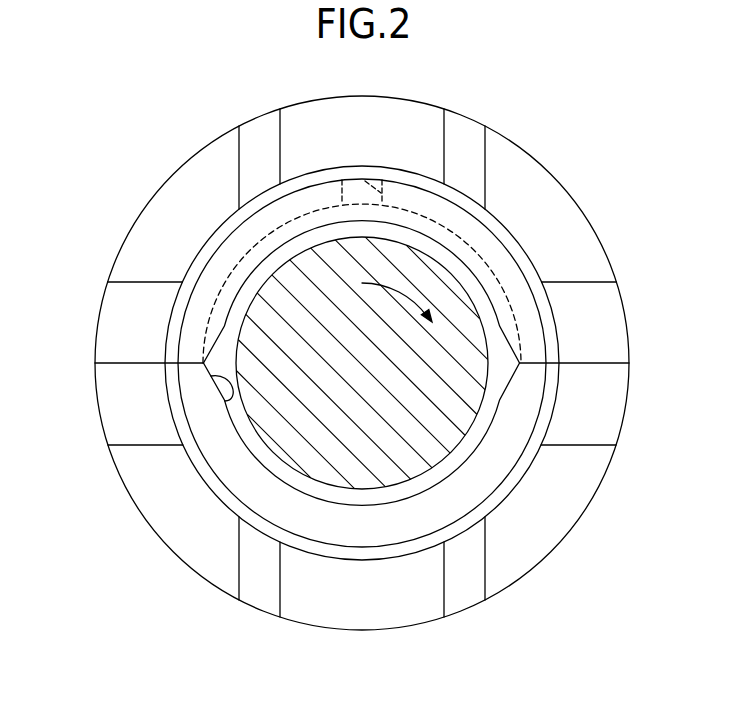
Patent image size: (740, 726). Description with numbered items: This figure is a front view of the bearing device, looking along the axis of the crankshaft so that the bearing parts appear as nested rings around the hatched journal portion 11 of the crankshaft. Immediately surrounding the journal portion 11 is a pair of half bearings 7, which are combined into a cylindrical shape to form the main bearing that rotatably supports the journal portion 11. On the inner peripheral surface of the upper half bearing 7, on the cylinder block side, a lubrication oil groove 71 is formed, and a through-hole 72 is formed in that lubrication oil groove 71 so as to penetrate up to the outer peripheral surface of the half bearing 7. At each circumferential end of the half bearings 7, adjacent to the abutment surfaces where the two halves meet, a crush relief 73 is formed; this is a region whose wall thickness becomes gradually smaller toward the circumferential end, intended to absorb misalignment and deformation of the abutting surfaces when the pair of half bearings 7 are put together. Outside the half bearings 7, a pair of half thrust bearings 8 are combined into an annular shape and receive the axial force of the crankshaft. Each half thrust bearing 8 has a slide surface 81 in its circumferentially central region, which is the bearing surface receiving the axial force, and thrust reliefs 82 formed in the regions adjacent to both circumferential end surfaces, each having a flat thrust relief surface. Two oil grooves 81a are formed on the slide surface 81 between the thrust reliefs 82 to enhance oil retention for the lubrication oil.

The half bearing 7 is at (350, 332).
The half thrust bearing 8 is at (363, 364).
The journal portion 11 is at (443, 430).
The lubrication oil groove 71 is at (223, 281).
The through-hole 72 is at (381, 179).
The crush relief 73 is at (222, 405).
The slide surface 81 is at (560, 206).
The oil groove 81a is at (256, 127).
The thrust relief 82 is at (118, 324).